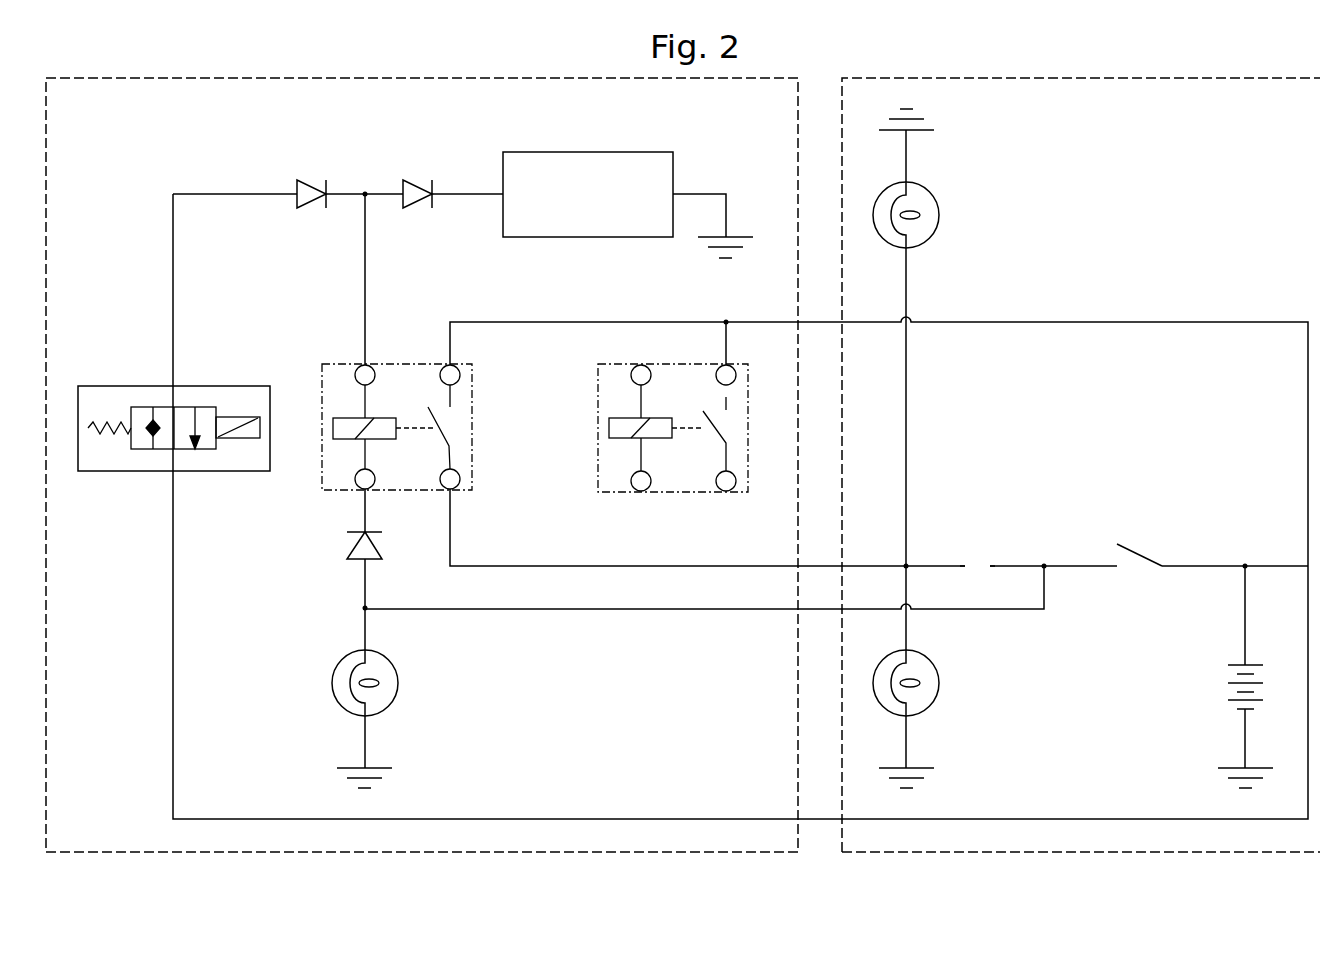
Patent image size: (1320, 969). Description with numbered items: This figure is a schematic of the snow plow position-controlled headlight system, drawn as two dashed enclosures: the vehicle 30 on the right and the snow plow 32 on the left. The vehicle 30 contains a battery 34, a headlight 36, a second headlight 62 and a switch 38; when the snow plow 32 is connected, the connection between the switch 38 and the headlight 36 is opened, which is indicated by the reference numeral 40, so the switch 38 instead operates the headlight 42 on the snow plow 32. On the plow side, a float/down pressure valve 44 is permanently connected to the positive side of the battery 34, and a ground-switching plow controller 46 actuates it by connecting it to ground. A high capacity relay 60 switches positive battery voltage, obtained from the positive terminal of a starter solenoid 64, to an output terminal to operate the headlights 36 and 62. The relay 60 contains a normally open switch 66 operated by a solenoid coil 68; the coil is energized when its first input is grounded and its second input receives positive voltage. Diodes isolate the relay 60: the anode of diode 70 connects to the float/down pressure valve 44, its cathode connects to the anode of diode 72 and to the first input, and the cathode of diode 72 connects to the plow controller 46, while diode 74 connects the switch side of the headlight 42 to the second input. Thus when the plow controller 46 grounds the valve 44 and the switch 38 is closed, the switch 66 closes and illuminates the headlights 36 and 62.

The vehicle 30 is at (1097, 78).
The snow plow 32 is at (375, 78).
The battery 34 is at (1228, 683).
The headlight 36 is at (939, 683).
The switch 38 is at (1138, 553).
The opened electrical connection 40 is at (980, 566).
The headlight 42 is at (398, 683).
The float/down pressure valve 44 is at (195, 386).
The plow controller 46 is at (587, 237).
The relay 60 is at (394, 430).
The second headlight 62 is at (939, 215).
The starter solenoid 64 is at (747, 417).
The normally open switch 66 is at (451, 439).
The solenoid coil 68 is at (343, 418).
The diode 70 is at (312, 192).
The diode 72 is at (420, 192).
The diode 74 is at (355, 545).